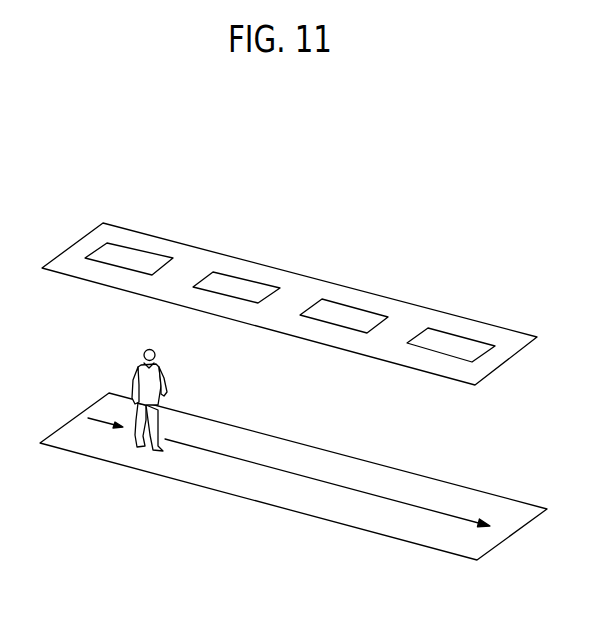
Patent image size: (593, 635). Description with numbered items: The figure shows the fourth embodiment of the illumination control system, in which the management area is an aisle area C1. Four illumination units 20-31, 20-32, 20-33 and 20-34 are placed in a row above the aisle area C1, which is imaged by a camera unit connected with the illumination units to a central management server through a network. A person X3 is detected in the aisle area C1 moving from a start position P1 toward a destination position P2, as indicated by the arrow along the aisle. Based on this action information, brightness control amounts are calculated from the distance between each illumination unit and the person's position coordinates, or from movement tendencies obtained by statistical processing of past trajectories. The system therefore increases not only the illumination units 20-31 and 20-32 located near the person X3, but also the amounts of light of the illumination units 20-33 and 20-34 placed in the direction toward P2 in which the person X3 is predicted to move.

The illumination unit 20-31 is at (135, 248).
The illumination unit 20-32 is at (243, 278).
The illumination unit 20-33 is at (358, 308).
The illumination unit 20-34 is at (463, 337).
The person X3 is at (160, 374).
The start position P1 is at (87, 406).
The destination position P2 is at (538, 550).
The aisle area C1 is at (423, 546).